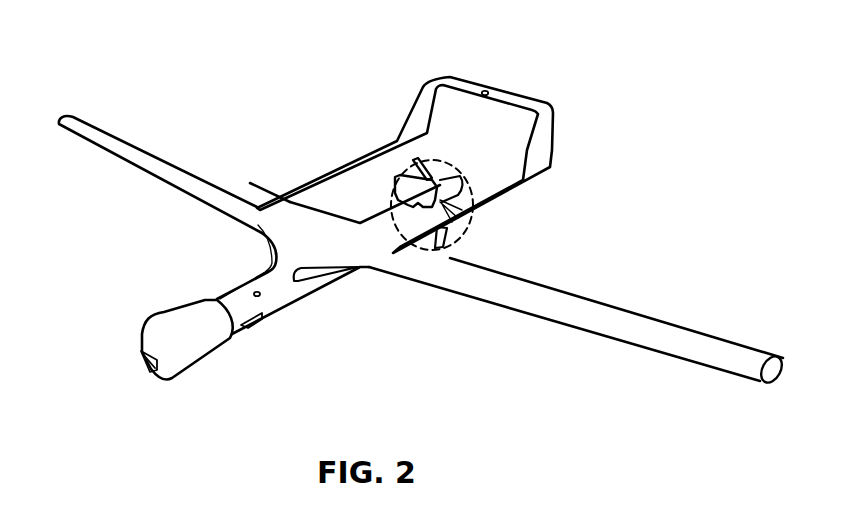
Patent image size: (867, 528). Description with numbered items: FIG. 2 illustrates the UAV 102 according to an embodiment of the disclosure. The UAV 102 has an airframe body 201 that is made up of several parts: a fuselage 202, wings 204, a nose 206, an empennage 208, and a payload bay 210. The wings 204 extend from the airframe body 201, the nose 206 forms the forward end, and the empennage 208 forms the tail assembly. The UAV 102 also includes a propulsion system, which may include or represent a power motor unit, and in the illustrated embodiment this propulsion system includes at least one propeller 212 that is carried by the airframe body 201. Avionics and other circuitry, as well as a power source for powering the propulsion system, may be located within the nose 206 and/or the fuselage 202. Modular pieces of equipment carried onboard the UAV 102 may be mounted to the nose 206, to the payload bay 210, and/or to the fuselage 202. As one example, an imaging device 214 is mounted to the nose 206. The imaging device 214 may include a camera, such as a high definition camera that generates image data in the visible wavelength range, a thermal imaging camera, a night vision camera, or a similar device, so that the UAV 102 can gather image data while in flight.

The UAV 102 is at (296, 45).
The airframe body 201 is at (359, 298).
The fuselage 202 is at (257, 290).
The wings 204 is at (148, 152).
The nose 206 is at (170, 328).
The empennage 208 is at (543, 128).
The payload bay 210 is at (283, 307).
The propeller 212 is at (452, 174).
The imaging device 214 is at (143, 363).